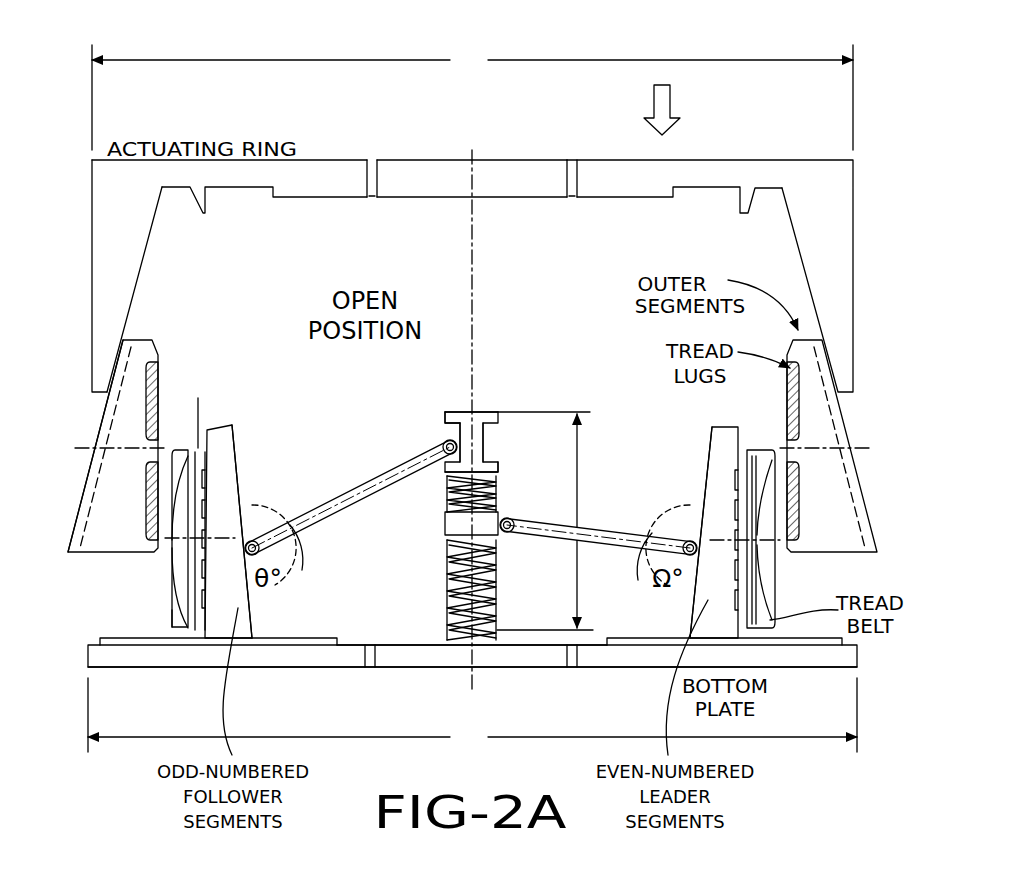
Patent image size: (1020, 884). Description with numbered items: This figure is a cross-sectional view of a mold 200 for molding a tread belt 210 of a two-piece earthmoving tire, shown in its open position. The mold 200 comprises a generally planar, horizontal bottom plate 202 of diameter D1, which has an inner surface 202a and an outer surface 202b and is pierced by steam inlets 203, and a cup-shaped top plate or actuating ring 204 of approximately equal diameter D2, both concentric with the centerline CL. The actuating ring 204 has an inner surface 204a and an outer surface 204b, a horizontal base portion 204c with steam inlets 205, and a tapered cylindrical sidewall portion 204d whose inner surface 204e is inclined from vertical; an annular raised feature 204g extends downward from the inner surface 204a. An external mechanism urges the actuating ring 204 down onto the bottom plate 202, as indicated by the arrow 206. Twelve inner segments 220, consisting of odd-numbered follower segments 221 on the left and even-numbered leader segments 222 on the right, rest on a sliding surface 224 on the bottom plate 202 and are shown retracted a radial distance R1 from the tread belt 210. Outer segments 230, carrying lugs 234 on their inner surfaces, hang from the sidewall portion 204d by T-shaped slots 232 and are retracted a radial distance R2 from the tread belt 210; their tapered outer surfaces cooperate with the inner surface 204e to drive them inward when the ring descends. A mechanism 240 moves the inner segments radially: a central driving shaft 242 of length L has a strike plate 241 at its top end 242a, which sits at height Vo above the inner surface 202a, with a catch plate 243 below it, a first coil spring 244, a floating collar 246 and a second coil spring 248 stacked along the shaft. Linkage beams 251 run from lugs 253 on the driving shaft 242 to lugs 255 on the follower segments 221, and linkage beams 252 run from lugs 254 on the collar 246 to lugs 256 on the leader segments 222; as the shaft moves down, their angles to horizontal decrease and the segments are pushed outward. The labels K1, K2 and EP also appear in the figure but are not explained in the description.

The mold 200 is at (300, 115).
The bottom plate 202 is at (610, 672).
The inner surface of bottom plate 202a is at (417, 642).
The outer surface of bottom plate 202b is at (472, 698).
The steam inlets 203 is at (370, 660).
The actuating ring 204 is at (497, 160).
The inner surface of top plate 204a is at (413, 197).
The outer surface of top plate 204b is at (420, 160).
The base portion of top plate 204c is at (368, 162).
The sidewall portion of top plate 204d is at (92, 190).
The inner surface of sidewall portion 204e is at (145, 262).
The annular raised feature 204g is at (205, 212).
The steam inlets 205 is at (370, 200).
The arrow 206 is at (672, 112).
The tread belt 210 is at (757, 598).
The inner segments 220 is at (235, 430).
The odd-numbered follower segments 221 is at (238, 478).
The even-numbered leader segments 222 is at (708, 458).
The sliding surface 224 is at (128, 647).
The outer segments 230 is at (153, 345).
The T-shaped slots 232 is at (85, 488).
The lugs 234 is at (153, 392).
The mechanism 240 is at (478, 403).
The strike plate 241 is at (445, 414).
The driving shaft 242 is at (517, 425).
The top end of driving shaft 242a is at (455, 410).
The catch plate 243 is at (488, 462).
The first coil spring 244 is at (488, 502).
The collar 246 is at (455, 522).
The second coil spring 248 is at (495, 641).
The first set of linkage beams 251 is at (351, 517).
The second set of linkage beams 252 is at (625, 548).
The lugs on driving shaft 253 is at (446, 447).
The lugs on collar 254 is at (507, 532).
The lugs on follower segments 255 is at (260, 543).
The lugs on leader segments 256 is at (692, 540).
The diameter of base plate D1 is at (472, 717).
The diameter of top plate D2 is at (472, 97).
The length of driving shaft L is at (573, 521).
The height of driving shaft top end Vo is at (545, 508).
The radial retraction distance of inner segments R1 is at (198, 400).
The radial retraction distance of outer segments R2 is at (172, 618).
The spring constant 1 K1 is at (450, 495).
The spring constant 2 K2 is at (450, 590).
The end point EP is at (180, 548).
The centerline CL is at (472, 270).